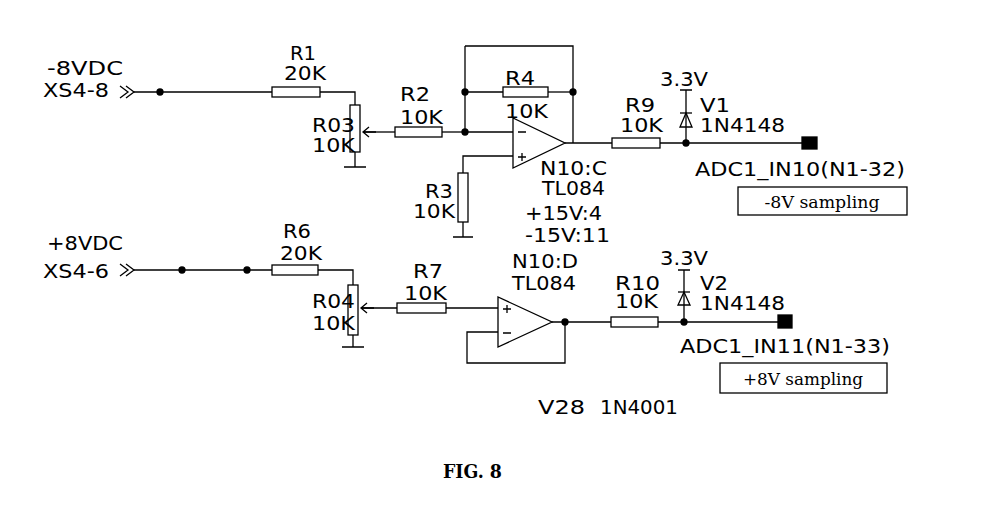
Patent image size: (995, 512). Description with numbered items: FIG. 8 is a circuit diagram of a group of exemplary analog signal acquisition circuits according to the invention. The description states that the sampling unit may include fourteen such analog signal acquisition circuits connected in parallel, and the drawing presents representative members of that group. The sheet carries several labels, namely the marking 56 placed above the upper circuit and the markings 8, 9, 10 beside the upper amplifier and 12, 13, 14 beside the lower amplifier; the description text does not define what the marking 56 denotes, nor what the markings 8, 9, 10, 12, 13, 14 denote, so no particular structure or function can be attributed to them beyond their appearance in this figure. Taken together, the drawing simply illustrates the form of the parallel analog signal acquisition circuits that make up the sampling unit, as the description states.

The feedback loop of operational amplifier N10:C 56 is at (526, 46).
The output pin 8 of operational amplifier N10:C 8 is at (588, 131).
The inverting input pin 9 of operational amplifier N10:C 9 is at (489, 121).
The non-inverting input pin 10 of operational amplifier N10:C 10 is at (488, 156).
The non-inverting input pin 12 of operational amplifier N10:D 12 is at (472, 295).
The inverting input pin 13 of operational amplifier N10:D 13 is at (516, 337).
The output pin 14 of operational amplifier N10:D 14 is at (581, 312).